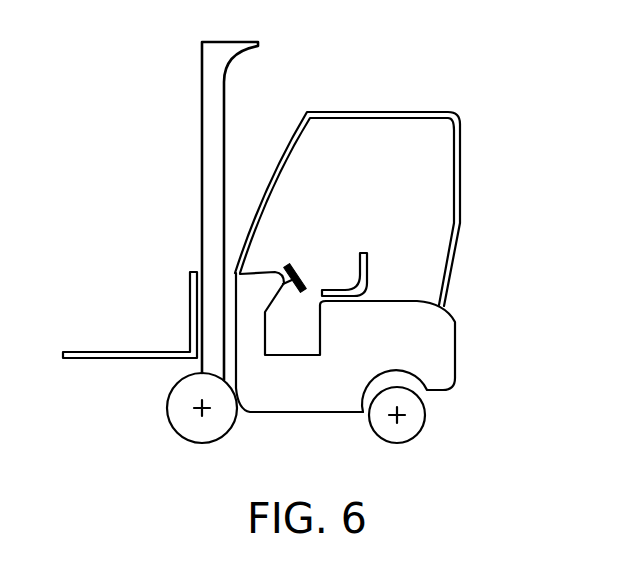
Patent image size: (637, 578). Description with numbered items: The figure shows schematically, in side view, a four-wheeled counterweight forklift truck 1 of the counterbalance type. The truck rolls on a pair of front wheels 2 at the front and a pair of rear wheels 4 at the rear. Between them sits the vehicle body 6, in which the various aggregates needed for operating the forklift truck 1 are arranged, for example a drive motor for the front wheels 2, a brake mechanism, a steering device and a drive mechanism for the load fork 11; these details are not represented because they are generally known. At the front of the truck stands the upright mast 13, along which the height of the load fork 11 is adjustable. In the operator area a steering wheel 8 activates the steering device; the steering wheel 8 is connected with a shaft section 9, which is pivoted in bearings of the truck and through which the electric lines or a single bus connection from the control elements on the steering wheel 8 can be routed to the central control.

The counterweight forklift truck 1 is at (295, 262).
The front wheels 2 is at (171, 427).
The rear wheels 4 is at (422, 428).
The vehicle body 6 is at (376, 353).
The steering wheel 8 is at (306, 270).
The shaft section 9 is at (289, 270).
The load fork 11 is at (116, 350).
The mast 13 is at (203, 128).